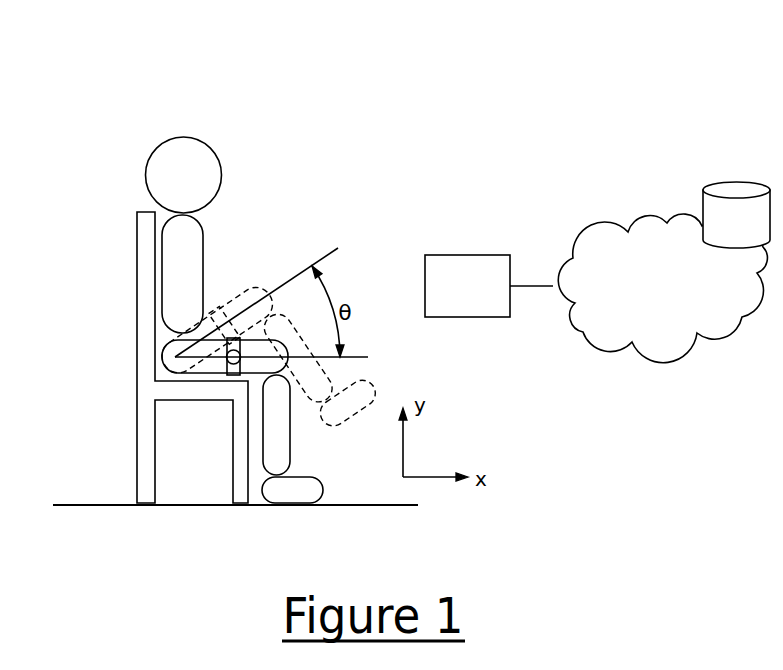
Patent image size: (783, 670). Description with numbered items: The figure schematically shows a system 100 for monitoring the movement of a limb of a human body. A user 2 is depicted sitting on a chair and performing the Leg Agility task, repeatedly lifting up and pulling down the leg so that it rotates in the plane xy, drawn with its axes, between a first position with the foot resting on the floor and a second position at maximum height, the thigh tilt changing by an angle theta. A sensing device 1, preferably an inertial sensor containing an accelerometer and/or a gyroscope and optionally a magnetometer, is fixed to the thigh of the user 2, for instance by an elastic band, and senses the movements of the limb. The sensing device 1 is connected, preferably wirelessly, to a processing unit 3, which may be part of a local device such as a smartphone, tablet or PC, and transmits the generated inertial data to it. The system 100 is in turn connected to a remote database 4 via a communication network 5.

The sensing device 1 is at (237, 376).
The user 2 is at (225, 119).
The processing unit 3 is at (467, 286).
The remote database 4 is at (736, 215).
The communication network 5 is at (662, 288).
The system 100 is at (539, 72).